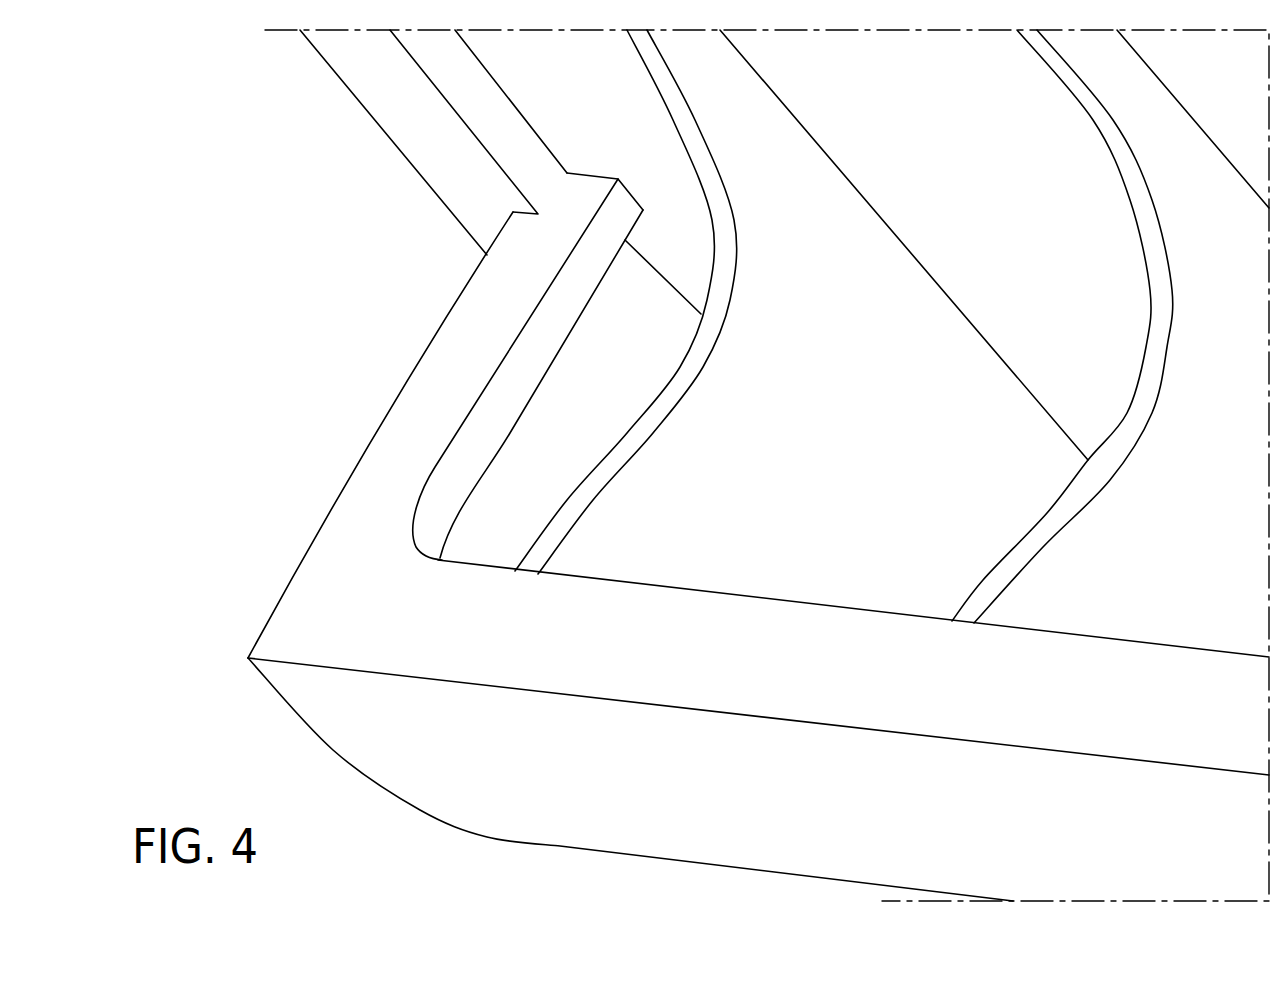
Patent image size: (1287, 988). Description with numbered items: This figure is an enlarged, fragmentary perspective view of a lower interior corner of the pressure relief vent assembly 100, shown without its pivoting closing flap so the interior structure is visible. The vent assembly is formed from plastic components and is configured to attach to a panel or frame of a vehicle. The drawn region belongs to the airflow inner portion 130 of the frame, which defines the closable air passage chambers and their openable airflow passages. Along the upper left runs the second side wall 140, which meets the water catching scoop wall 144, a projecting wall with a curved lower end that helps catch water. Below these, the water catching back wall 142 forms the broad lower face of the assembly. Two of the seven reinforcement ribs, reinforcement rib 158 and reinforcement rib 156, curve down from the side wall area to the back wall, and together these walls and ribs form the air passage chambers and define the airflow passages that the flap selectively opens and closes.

The pressure relief vent assembly 100 is at (758, 561).
The airflow inner portion 130 is at (336, 504).
The second side wall 140 is at (482, 104).
The water catching back wall 142 is at (616, 649).
The water catching scoop wall 144 is at (503, 407).
The reinforcement rib 156 is at (1180, 101).
The reinforcement rib 158 is at (834, 157).